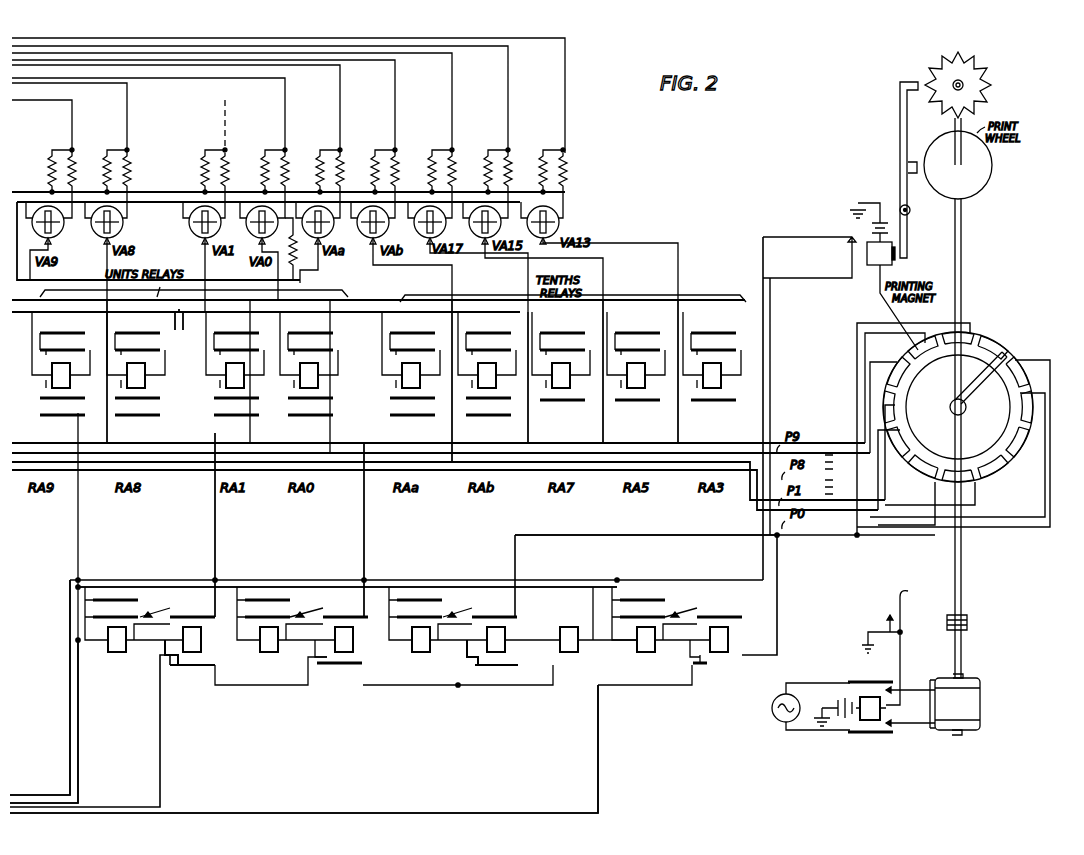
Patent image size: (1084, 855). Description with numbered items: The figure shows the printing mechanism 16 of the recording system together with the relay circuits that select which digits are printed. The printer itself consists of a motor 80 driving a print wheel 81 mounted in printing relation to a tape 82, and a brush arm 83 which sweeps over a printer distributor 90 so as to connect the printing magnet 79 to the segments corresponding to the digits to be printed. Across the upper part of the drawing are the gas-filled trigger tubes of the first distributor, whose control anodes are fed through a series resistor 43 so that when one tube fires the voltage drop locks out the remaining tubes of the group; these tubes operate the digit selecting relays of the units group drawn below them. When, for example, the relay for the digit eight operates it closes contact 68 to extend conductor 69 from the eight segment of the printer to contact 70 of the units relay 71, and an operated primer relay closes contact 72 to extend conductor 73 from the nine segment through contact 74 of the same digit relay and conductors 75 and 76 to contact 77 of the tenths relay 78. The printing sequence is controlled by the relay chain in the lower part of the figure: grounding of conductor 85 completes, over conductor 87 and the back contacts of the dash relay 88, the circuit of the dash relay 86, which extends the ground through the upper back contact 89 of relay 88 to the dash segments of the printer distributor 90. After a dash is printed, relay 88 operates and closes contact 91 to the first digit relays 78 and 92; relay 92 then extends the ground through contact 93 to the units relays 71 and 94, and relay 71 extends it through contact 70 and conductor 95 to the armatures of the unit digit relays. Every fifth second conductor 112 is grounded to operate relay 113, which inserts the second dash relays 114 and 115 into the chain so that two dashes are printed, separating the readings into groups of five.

The printing mechanism 16 is at (819, 208).
The resistor 43 is at (305, 262).
The contact 68 is at (150, 390).
The conductor 69 is at (262, 472).
The contact 70 is at (138, 604).
The units relay 71 is at (108, 648).
The contact 72 is at (492, 332).
The conductor 73 is at (626, 451).
The contact 74 is at (150, 357).
The conductor 75 is at (145, 316).
The conductor 76 is at (365, 530).
The contact 77 is at (288, 604).
The tenths relay 78 is at (260, 648).
The printing magnet 79 is at (885, 265).
The motor 80 is at (938, 735).
The print wheel 81 is at (985, 190).
The tape 82 is at (925, 133).
The brush arm 83 is at (968, 395).
The conductor 85 is at (590, 576).
The dash relay 86 is at (637, 648).
The conductor 87 is at (560, 597).
The dash relay 88 is at (728, 645).
The upper back contact 89 is at (660, 604).
The printer distributor 90 is at (1022, 452).
The contact 91 is at (712, 668).
The first digit relay 92 is at (353, 645).
The contact 93 is at (330, 670).
The units relay 94 is at (201, 645).
The conductor 95 is at (216, 530).
The conductor 112 is at (267, 810).
The relay 113 is at (558, 631).
The second dash relay 114 is at (412, 648).
The second dash relay 115 is at (505, 645).